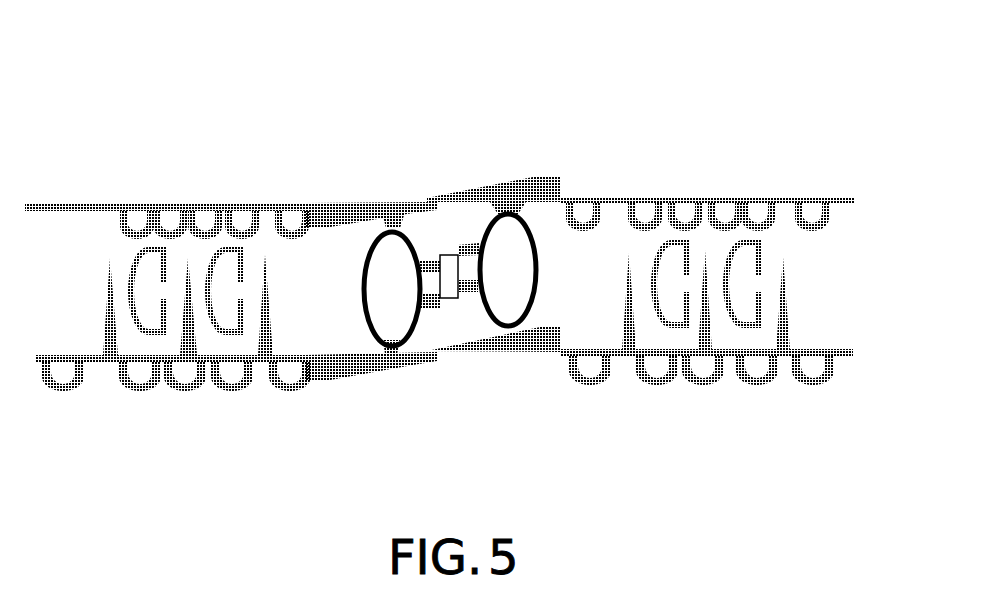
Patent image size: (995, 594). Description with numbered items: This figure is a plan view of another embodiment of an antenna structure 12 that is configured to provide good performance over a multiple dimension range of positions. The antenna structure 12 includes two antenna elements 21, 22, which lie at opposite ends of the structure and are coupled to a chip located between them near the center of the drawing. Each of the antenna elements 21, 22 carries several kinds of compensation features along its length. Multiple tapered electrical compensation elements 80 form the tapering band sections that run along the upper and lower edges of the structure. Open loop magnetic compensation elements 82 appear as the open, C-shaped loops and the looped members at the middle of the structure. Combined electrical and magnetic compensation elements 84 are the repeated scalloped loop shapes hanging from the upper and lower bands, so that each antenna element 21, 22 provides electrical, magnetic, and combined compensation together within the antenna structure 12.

The antenna structure 12 is at (628, 88).
The antenna element 21 is at (100, 181).
The antenna element 22 is at (760, 178).
The tapered electrical compensation elements 80 is at (440, 286).
The open loop magnetic compensation elements 82 is at (488, 247).
The combined electrical and magnetic compensation elements 84 is at (452, 303).